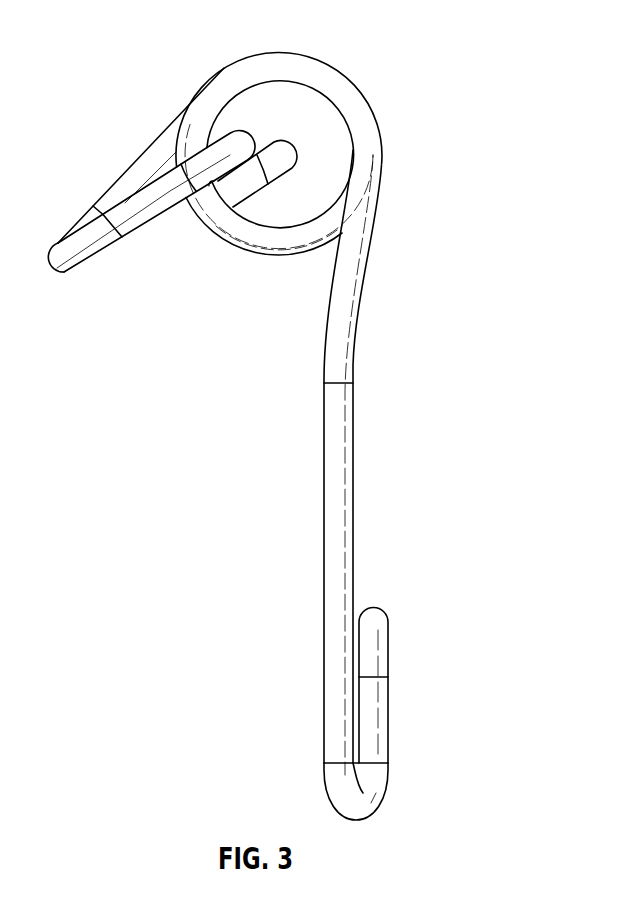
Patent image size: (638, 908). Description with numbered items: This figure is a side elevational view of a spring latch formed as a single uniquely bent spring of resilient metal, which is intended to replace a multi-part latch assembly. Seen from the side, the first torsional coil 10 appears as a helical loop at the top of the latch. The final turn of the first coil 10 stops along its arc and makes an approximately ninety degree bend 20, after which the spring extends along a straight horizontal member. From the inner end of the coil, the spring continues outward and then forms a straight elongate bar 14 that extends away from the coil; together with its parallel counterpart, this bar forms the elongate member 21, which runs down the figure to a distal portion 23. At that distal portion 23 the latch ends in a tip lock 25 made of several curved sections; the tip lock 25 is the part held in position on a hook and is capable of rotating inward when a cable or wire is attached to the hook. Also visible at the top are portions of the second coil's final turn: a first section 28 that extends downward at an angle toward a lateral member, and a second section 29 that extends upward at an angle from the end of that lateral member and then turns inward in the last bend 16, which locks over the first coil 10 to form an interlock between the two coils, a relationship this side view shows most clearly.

The first torsional coil 10 is at (356, 79).
The elongate bar 14 is at (334, 482).
The last bend 16 is at (233, 133).
The bend 20 is at (285, 153).
The elongate member 21 is at (330, 505).
The distal portion 23 is at (377, 829).
The tip lock 25 is at (372, 725).
The first section 28 is at (143, 153).
The second section 29 is at (133, 214).